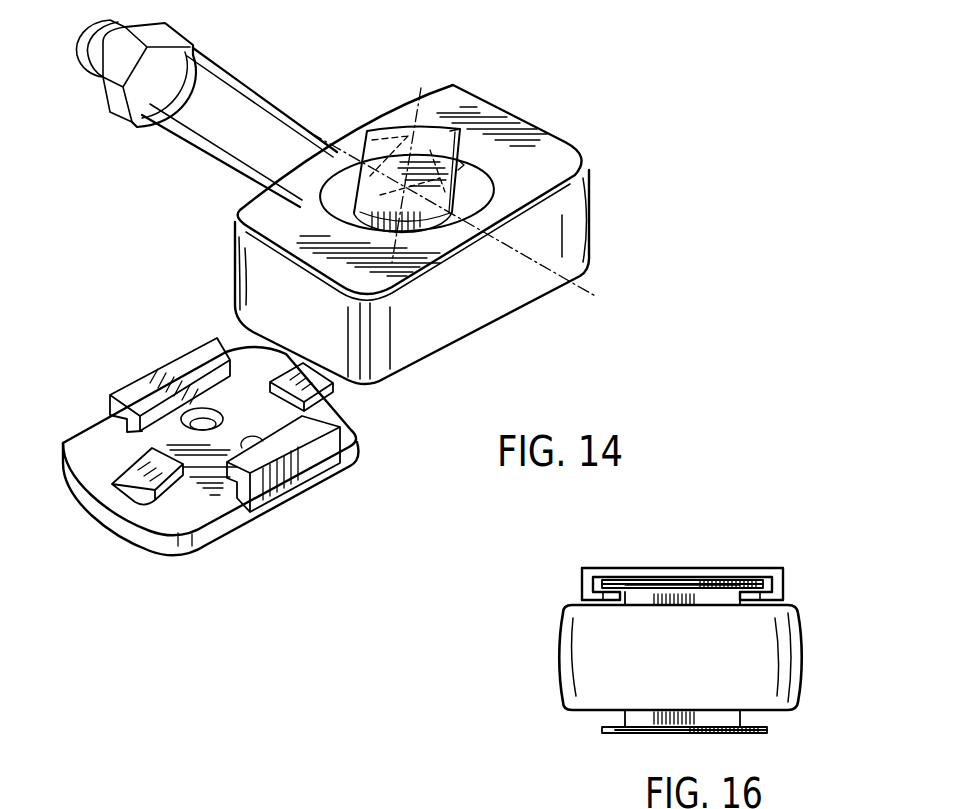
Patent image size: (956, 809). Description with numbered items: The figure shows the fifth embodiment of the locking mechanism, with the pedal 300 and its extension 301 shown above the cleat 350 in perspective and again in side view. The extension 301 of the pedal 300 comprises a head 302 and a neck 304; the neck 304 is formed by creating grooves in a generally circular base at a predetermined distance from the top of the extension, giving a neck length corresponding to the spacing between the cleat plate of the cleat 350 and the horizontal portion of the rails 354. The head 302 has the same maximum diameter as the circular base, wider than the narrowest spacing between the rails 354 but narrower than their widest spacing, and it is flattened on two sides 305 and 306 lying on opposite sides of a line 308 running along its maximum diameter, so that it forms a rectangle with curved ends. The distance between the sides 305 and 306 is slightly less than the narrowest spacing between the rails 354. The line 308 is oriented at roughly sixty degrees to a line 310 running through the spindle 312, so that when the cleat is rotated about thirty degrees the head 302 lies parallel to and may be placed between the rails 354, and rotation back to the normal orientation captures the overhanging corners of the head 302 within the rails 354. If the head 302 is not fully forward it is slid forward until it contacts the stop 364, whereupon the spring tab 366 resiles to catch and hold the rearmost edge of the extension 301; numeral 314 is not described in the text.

In FIG. 14, the pedal 300 is at (452, 212).
In FIG. 16, the pedal 300 is at (661, 668).
In FIG. 14, the extension 301 is at (427, 143).
In FIG. 16, the extension 301 is at (658, 580).
In FIG. 16, the head 302 is at (742, 580).
In FIG. 16, the neck 304 is at (705, 598).
In FIG. 14, the side 305 is at (353, 195).
In FIG. 14, the side 306 is at (463, 164).
In FIG. 14, the line 308 is at (419, 128).
In FIG. 14, the line 310 is at (454, 234).
In FIG. 14, the spindle 312 is at (220, 93).
In FIG. 14, the key edge 314 is at (436, 137).
In FIG. 14, the cleat 350 is at (252, 441).
In FIG. 16, the cleat 350 is at (668, 643).
In FIG. 14, the rails 354 is at (157, 381).
In FIG. 16, the rails 354 is at (607, 600).
In FIG. 14, the stop 364 is at (303, 363).
In FIG. 14, the spring tab 366 is at (153, 478).